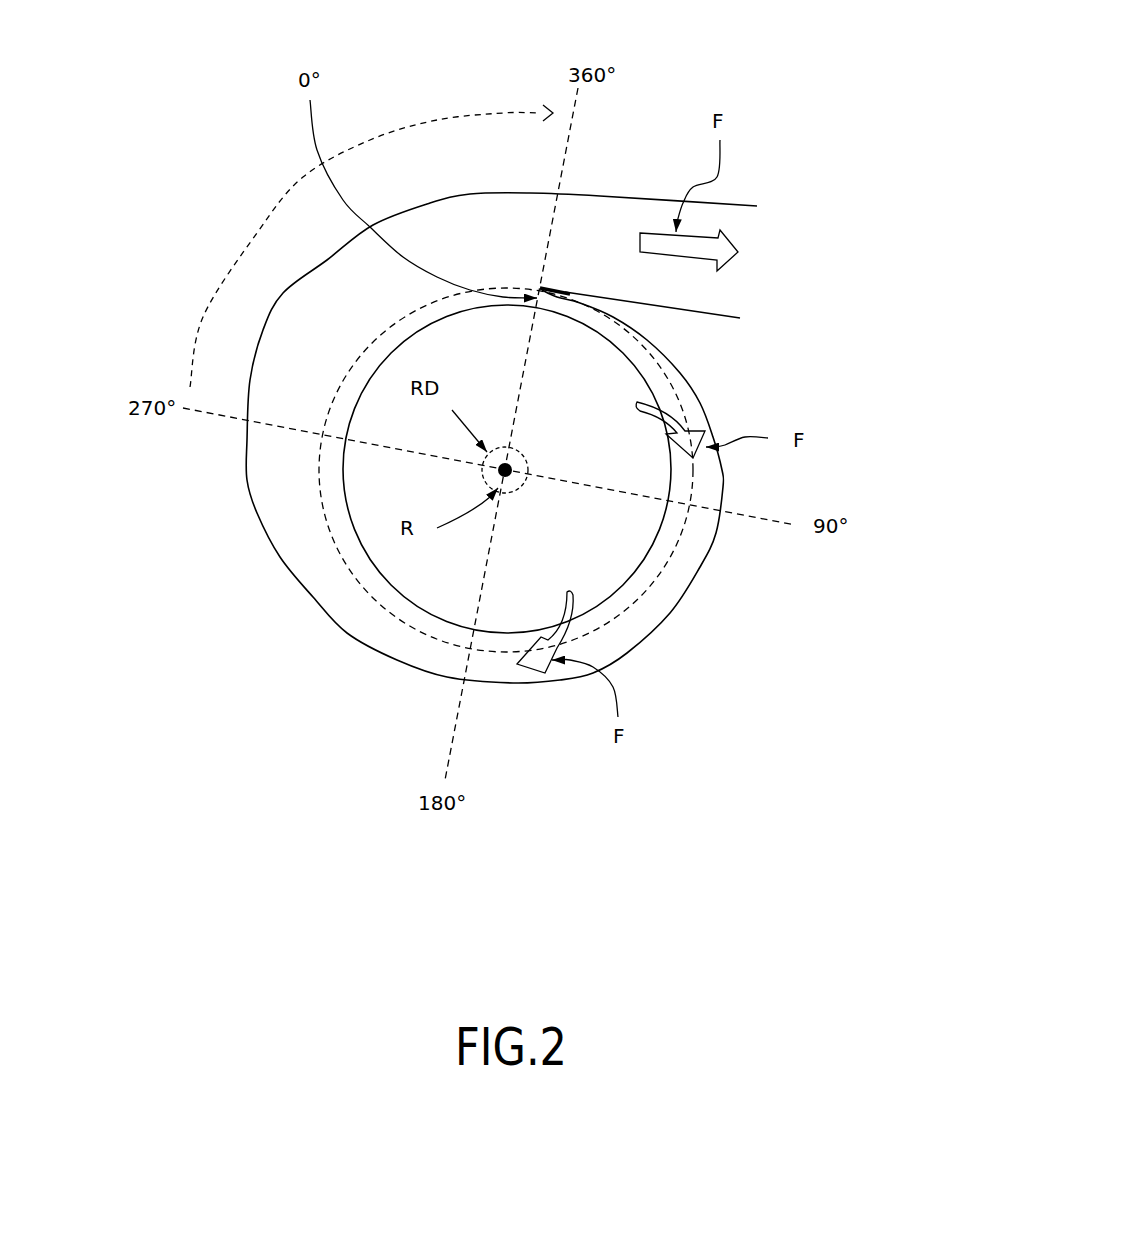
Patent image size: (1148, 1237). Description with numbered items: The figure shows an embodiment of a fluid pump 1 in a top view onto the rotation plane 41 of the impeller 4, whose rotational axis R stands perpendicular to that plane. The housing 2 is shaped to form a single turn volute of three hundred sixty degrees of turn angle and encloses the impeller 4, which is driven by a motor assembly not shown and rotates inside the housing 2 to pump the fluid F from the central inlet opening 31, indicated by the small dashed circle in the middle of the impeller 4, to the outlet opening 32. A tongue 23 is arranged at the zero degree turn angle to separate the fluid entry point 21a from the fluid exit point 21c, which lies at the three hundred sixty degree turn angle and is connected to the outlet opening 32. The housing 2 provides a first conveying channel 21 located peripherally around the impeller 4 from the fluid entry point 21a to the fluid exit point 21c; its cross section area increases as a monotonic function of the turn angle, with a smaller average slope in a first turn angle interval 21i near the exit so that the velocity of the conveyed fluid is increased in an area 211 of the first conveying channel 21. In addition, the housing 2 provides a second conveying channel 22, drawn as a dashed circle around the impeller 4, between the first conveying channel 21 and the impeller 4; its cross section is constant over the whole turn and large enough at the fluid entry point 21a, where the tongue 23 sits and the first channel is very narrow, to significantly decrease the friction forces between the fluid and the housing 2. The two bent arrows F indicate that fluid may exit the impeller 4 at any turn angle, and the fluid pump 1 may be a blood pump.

The fluid pump 1 is at (501, 442).
The housing 2 is at (348, 640).
The impeller 4 is at (617, 590).
The first conveying channel 21 is at (301, 523).
The fluid entry point 21a is at (554, 312).
The fluid exit point 21c is at (542, 262).
The first turn angle interval 21i is at (410, 362).
The area of the first conveying channel 211 is at (227, 293).
The second conveying channel 22 is at (355, 548).
The tongue 23 is at (567, 285).
The inlet opening 31 is at (481, 475).
The outlet opening 32 is at (769, 288).
The rotation plane 41 is at (629, 530).